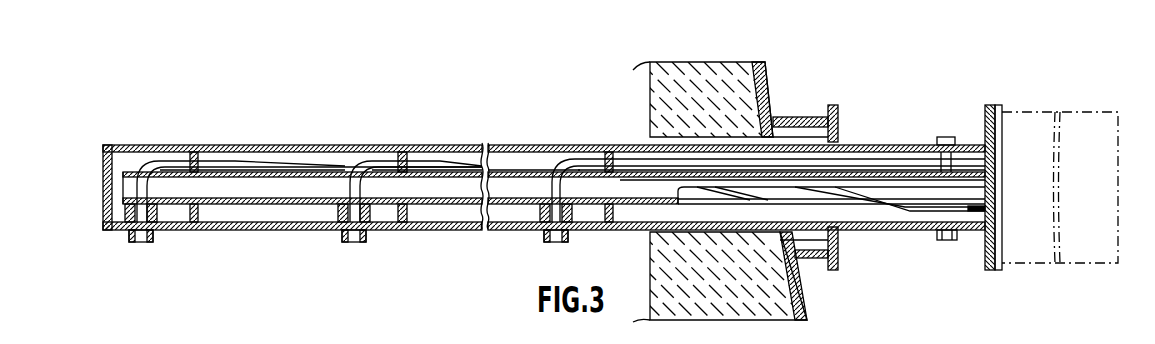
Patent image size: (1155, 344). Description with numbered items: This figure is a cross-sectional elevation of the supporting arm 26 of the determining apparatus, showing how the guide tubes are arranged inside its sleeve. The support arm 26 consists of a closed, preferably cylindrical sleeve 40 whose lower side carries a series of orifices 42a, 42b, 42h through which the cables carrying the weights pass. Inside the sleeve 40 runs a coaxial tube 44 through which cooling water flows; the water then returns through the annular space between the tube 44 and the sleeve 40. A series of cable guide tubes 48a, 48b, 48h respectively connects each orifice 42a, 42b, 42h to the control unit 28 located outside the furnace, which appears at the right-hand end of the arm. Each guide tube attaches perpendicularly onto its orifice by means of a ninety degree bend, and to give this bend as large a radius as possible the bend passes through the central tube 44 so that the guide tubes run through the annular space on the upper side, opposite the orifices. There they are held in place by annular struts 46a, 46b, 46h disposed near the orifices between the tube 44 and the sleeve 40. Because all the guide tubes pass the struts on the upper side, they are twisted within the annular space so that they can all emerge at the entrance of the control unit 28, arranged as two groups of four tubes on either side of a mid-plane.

The supporting arm 26 is at (289, 114).
The control unit 28 is at (1017, 112).
The closed sleeve 40 is at (460, 145).
The orifice 42a is at (125, 230).
The orifice 42b is at (340, 229).
The orifice 42h is at (541, 229).
The coaxial tube 44 is at (233, 205).
The annular strut 46a is at (207, 157).
The annular strut 46b is at (418, 150).
The annular strut 46h is at (598, 156).
The cable guide tube 48a is at (155, 162).
The cable guide tube 48b is at (366, 160).
The cable guide tube 48h is at (570, 161).